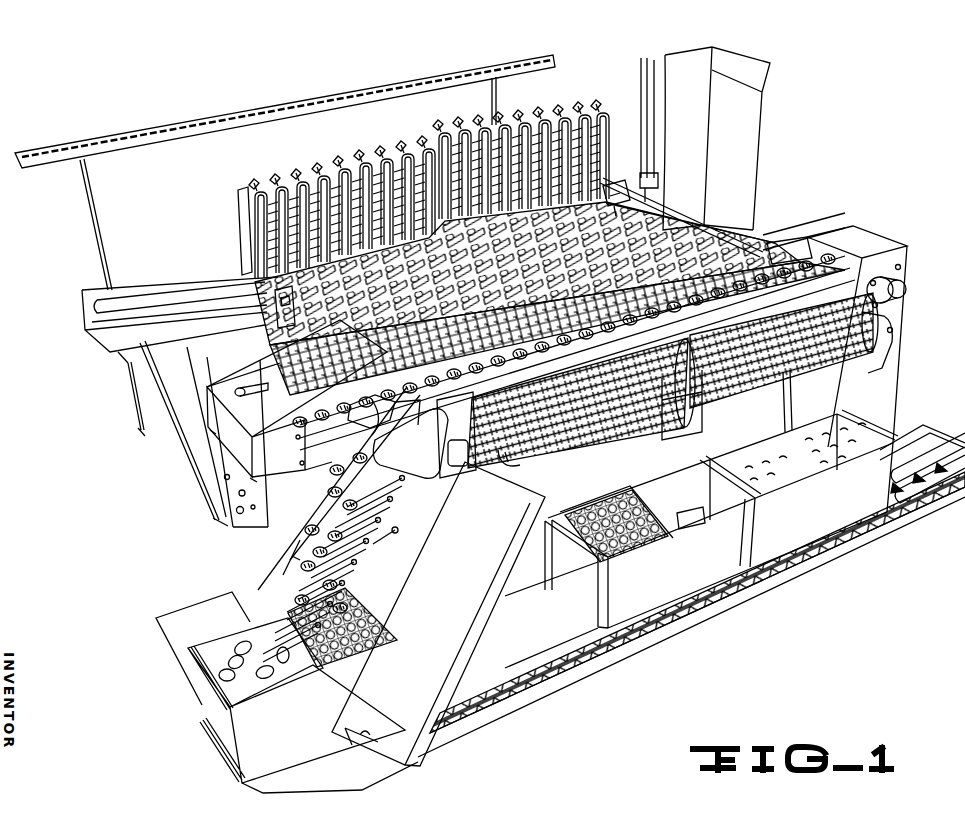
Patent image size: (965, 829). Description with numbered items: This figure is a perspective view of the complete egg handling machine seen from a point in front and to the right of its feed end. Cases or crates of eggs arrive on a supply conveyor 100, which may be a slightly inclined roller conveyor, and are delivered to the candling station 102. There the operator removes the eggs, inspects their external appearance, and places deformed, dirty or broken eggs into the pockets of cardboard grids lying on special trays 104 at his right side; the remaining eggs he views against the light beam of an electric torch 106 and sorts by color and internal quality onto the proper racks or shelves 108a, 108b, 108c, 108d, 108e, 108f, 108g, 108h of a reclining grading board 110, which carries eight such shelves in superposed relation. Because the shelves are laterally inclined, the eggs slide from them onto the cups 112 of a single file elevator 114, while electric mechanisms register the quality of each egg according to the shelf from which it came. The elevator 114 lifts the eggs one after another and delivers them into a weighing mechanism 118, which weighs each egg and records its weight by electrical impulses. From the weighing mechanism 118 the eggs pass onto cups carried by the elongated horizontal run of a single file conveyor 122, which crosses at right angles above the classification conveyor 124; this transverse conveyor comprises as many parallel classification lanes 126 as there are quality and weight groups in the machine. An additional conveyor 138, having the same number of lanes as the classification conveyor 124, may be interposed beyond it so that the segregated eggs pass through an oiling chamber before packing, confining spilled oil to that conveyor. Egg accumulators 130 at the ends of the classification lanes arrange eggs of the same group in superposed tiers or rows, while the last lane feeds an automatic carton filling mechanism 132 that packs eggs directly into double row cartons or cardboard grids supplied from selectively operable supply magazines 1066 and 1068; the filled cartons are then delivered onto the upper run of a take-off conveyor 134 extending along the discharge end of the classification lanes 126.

The supply conveyor 100 is at (819, 568).
The candling station 102 is at (248, 532).
The special trays 104 is at (401, 576).
The electric torch 106 is at (275, 597).
The rack or shelf 108a is at (305, 632).
The rack or shelf 108b is at (340, 610).
The rack or shelf 108c is at (344, 584).
The rack or shelf 108d is at (356, 562).
The rack or shelf 108e is at (368, 541).
The rack or shelf 108f is at (380, 520).
The rack or shelf 108g is at (392, 499).
The rack or shelf 108h is at (404, 479).
The reclining grading board 110 is at (398, 531).
The cups 112 is at (335, 492).
The single file elevator 114 is at (282, 560).
The weighing mechanism 118 is at (372, 400).
The single file conveyor 122 is at (889, 248).
The classification conveyor 124 is at (870, 356).
The classification lanes 126 is at (806, 368).
The egg accumulators 130 is at (558, 118).
The automatic carton filling mechanism 132 is at (618, 181).
The take-off conveyor 134 is at (207, 270).
The additional conveyor 138 is at (276, 300).
The supply magazine 1066 is at (645, 56).
The supply magazine 1068 is at (746, 157).